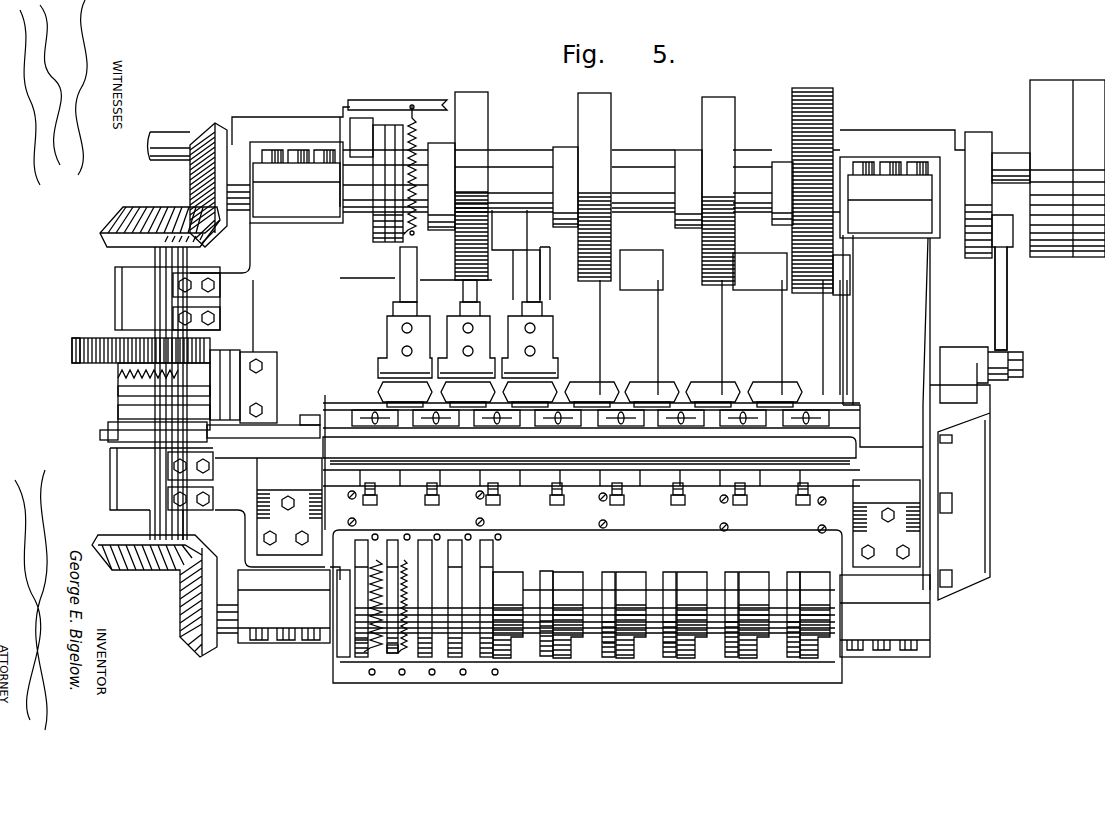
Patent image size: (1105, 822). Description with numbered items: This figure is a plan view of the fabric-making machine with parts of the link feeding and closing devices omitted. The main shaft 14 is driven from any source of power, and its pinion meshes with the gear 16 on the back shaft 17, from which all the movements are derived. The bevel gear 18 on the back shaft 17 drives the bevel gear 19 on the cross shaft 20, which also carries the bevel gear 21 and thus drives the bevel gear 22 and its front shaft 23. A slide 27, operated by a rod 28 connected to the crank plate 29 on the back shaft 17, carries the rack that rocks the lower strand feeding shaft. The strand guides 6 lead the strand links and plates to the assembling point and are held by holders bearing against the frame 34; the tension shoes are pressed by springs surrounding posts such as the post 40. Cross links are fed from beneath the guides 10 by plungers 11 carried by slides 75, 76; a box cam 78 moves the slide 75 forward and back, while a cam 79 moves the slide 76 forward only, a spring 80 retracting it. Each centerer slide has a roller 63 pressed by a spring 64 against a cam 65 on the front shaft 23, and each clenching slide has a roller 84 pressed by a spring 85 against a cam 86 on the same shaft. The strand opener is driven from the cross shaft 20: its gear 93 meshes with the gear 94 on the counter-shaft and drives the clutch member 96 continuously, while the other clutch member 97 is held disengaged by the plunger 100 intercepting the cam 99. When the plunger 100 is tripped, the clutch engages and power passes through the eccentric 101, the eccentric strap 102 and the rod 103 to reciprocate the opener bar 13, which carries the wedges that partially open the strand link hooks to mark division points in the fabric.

The strand guide 6 is at (357, 412).
The cross link guide 10 is at (387, 386).
The feed plunger 11 is at (392, 344).
The opener bar 13 is at (252, 445).
The main shaft 14 is at (1007, 157).
The gear 16 is at (793, 110).
The back shaft 17 is at (518, 177).
The bevel gear 18 is at (205, 143).
The bevel gear 19 is at (113, 223).
The cross shaft 20 is at (125, 257).
The bevel gear 21 is at (130, 571).
The bevel gear 22 is at (185, 647).
The front shaft 23 is at (593, 598).
The slide 27 is at (957, 353).
The rod 28 is at (1001, 316).
The crank plate 29 is at (977, 137).
The frame 34 is at (813, 453).
The post 40 is at (552, 500).
The roller 63 is at (360, 550).
The spring 64 is at (373, 650).
The cam 65 is at (355, 640).
The slide 75 is at (528, 312).
The slide 76 is at (400, 288).
The cam 78 is at (478, 118).
The cam 79 is at (383, 193).
The spring 80 is at (415, 123).
The roller 84 is at (458, 567).
The spring 85 is at (404, 655).
The cam 86 is at (392, 655).
The gear 93 is at (73, 347).
The gear 94 is at (108, 340).
The clutch member 96 is at (120, 367).
The clutch member 97 is at (120, 377).
The cam 99 is at (165, 412).
The plunger 100 is at (160, 391).
The eccentric 101 is at (114, 444).
The eccentric strap 102 is at (110, 431).
The rod 103 is at (283, 424).